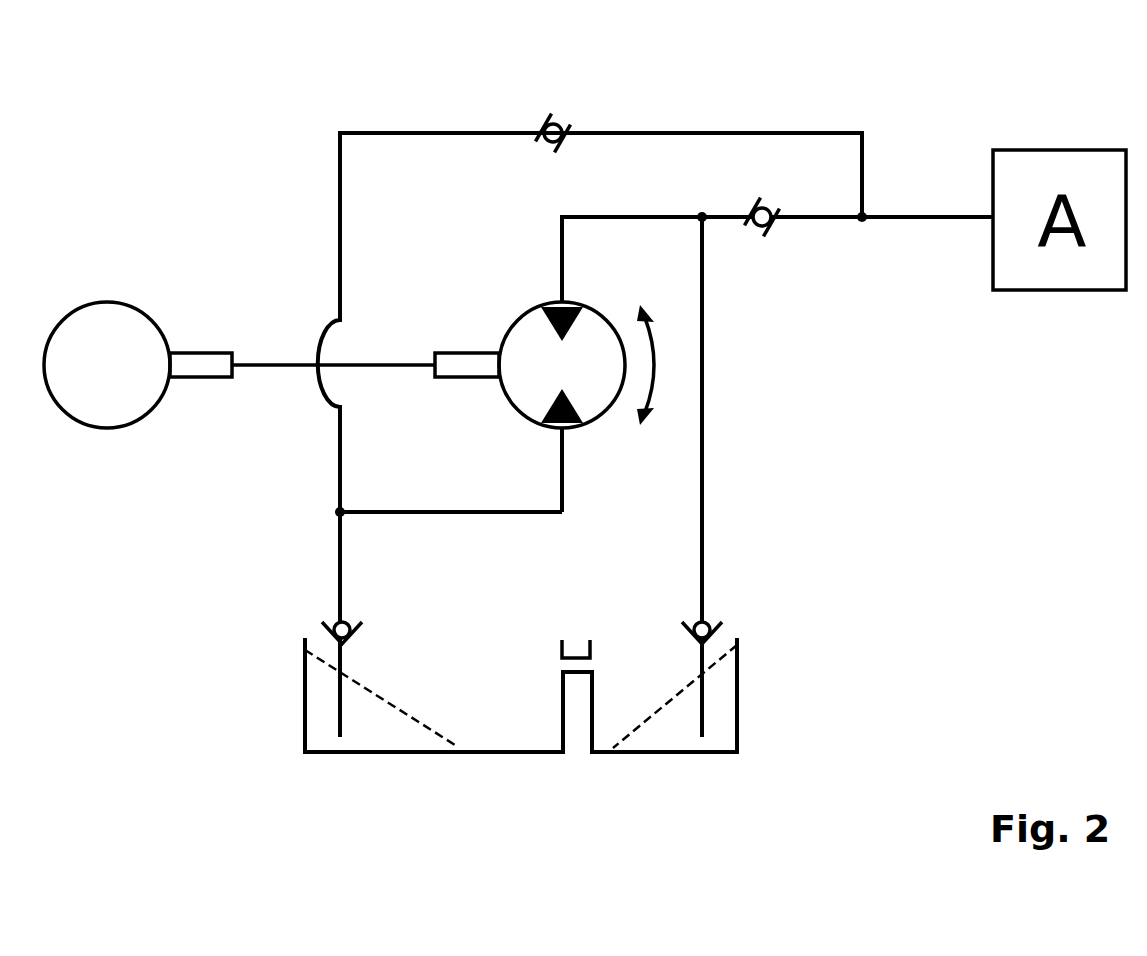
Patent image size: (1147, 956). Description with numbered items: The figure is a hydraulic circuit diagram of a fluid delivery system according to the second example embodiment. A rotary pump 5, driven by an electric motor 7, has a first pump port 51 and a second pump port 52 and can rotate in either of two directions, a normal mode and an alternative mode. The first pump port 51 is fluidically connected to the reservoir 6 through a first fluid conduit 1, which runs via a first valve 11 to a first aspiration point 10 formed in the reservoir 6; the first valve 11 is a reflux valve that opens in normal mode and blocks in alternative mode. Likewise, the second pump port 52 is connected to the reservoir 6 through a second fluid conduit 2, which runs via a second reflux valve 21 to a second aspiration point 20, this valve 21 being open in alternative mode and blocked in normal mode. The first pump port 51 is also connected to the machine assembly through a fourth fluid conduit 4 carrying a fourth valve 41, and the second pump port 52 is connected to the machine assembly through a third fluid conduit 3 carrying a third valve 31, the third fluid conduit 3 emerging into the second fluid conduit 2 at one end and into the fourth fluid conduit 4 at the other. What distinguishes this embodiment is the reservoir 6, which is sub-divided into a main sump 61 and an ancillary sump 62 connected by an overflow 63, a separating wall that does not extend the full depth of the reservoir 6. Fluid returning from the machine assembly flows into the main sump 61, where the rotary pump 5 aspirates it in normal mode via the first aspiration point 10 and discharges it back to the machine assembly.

The first fluid conduit 1 is at (622, 212).
The second fluid conduit 2 is at (412, 507).
The third fluid conduit 3 is at (385, 128).
The third valve 31 is at (534, 118).
The fourth fluid conduit 4 is at (732, 212).
The fourth valve 41 is at (788, 197).
The rotary pump 5 is at (677, 379).
The first pump port 51 is at (570, 298).
The second pump port 52 is at (578, 434).
The reservoir 6 is at (521, 750).
The main sump 61 is at (689, 758).
The ancillary sump 62 is at (383, 758).
The overflow 63 is at (580, 680).
The electric motor 7 is at (120, 298).
The first aspiration point 10 is at (707, 693).
The first valve 11 is at (735, 630).
The second aspiration point 20 is at (335, 696).
The second filter 21 is at (315, 632).